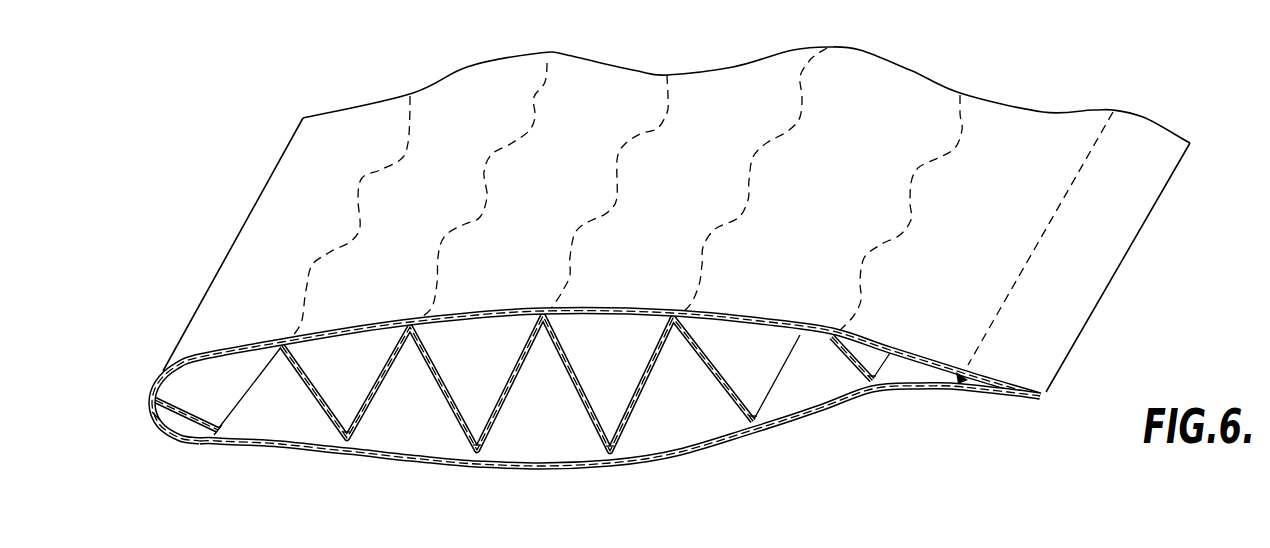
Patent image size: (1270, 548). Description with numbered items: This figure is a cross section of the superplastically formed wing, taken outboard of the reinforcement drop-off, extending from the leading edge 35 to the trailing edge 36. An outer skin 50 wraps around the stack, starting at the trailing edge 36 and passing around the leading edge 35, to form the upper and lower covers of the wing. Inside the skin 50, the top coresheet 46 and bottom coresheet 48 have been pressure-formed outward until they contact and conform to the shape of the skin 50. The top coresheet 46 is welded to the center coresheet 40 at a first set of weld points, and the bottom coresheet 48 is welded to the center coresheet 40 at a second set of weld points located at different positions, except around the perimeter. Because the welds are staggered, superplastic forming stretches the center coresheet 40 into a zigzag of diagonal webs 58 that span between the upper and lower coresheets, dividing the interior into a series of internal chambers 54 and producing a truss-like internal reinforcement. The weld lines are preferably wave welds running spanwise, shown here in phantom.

The leading edge 35 is at (240, 227).
The trailing edge 36 is at (1123, 268).
The center coresheet 40 is at (590, 311).
The top coresheet 46 is at (750, 320).
The bottom coresheet 48 is at (540, 466).
The skin 50 is at (222, 350).
The internal chambers 54 is at (480, 311).
The diagonal webs 58 is at (453, 396).